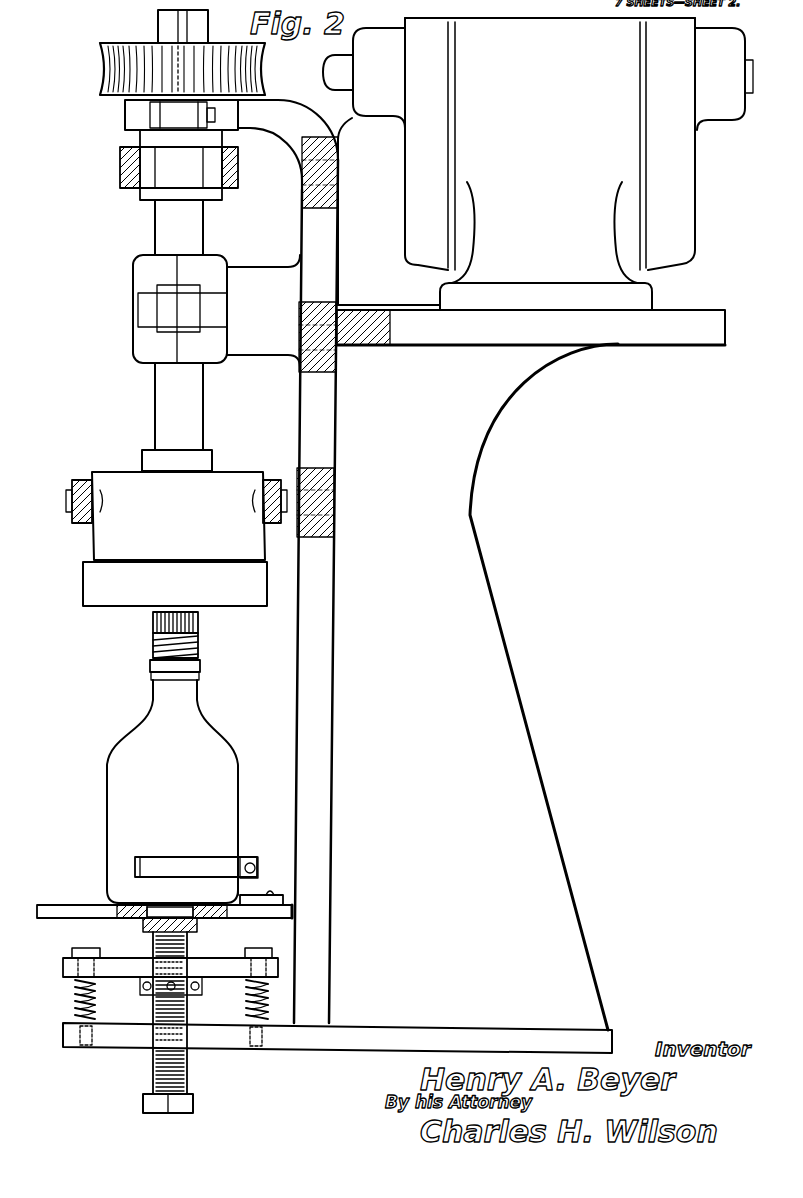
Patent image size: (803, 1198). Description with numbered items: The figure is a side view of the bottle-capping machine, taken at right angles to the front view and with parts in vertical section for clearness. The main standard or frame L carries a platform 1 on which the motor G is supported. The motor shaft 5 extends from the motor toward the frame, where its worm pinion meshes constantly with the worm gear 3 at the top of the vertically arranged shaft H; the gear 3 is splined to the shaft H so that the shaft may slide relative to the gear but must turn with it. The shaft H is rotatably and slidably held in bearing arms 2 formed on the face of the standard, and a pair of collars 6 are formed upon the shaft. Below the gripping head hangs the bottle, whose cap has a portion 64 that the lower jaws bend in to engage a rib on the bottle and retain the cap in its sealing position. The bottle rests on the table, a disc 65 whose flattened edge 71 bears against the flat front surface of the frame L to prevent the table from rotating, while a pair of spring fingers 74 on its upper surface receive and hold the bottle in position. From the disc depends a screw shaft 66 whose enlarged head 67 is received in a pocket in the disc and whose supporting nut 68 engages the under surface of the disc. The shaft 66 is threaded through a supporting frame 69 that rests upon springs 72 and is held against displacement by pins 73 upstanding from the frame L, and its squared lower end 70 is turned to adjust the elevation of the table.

The platform 1 is at (563, 330).
The bearing arms 2 is at (232, 116).
The worm gear 3 is at (162, 57).
The motor shaft 5 is at (342, 55).
The collars 6 is at (142, 141).
The bent portion of the cap 64 is at (190, 668).
The disc 65 is at (55, 905).
The screw shaft 66 is at (180, 942).
The enlarged head 67 is at (155, 906).
The supporting nut 68 is at (146, 926).
The supporting frame 69 is at (285, 966).
The squared lower end 70 is at (185, 1107).
The flattened edge portion 71 is at (293, 908).
The springs 72 is at (73, 1001).
The pins 73 is at (72, 953).
The spring fingers 74 is at (212, 866).
The motor G is at (672, 152).
The shaft H is at (158, 396).
The main standard or frame L is at (478, 758).